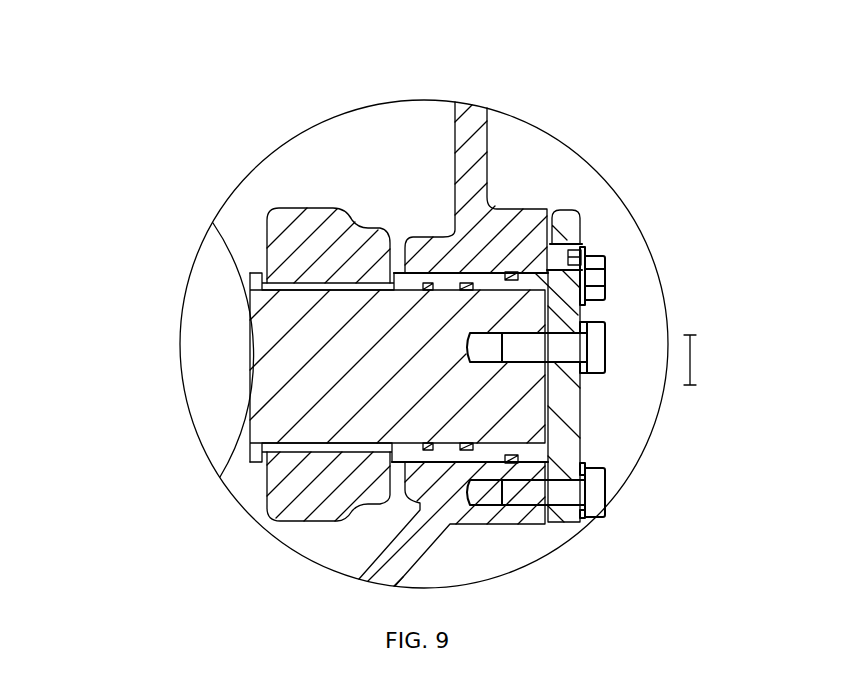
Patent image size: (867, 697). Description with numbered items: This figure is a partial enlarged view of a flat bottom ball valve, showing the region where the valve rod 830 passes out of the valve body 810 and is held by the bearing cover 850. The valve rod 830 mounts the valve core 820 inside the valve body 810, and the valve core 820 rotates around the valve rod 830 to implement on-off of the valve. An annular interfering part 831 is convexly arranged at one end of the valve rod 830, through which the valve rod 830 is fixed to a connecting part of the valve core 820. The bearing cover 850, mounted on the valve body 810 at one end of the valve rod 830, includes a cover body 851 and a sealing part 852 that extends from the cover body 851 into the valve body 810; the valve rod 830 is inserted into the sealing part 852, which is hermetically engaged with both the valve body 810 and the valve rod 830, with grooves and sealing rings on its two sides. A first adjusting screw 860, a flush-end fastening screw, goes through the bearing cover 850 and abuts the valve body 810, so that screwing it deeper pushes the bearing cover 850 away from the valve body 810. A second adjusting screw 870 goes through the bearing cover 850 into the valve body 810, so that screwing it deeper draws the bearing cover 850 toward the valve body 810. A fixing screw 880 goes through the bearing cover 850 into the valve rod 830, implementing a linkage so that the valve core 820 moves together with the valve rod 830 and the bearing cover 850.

The valve body 810 is at (497, 233).
The valve core 820 is at (323, 243).
The valve rod 830 is at (515, 403).
The interfering part 831 is at (252, 284).
The bearing cover 850 is at (570, 297).
The cover body 851 is at (570, 391).
The sealing part 852 is at (450, 456).
The first adjusting screw 860 is at (568, 262).
The second adjusting screw 870 is at (553, 493).
The fixing screw 880 is at (565, 349).